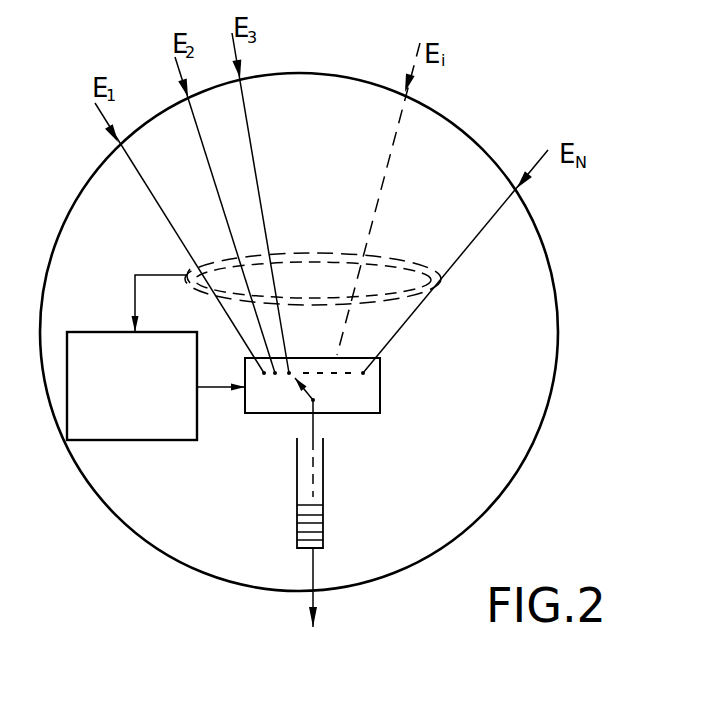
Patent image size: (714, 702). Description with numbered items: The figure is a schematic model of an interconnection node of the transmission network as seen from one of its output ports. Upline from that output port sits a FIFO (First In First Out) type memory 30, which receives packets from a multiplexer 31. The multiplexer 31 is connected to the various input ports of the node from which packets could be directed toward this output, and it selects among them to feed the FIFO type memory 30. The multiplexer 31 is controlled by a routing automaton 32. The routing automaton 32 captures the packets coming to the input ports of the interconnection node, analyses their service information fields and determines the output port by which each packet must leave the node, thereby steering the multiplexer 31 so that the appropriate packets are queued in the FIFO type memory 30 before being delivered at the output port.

The FIFO type memory 30 is at (323, 473).
The multiplexer 31 is at (380, 385).
The routing automaton 32 is at (101, 332).